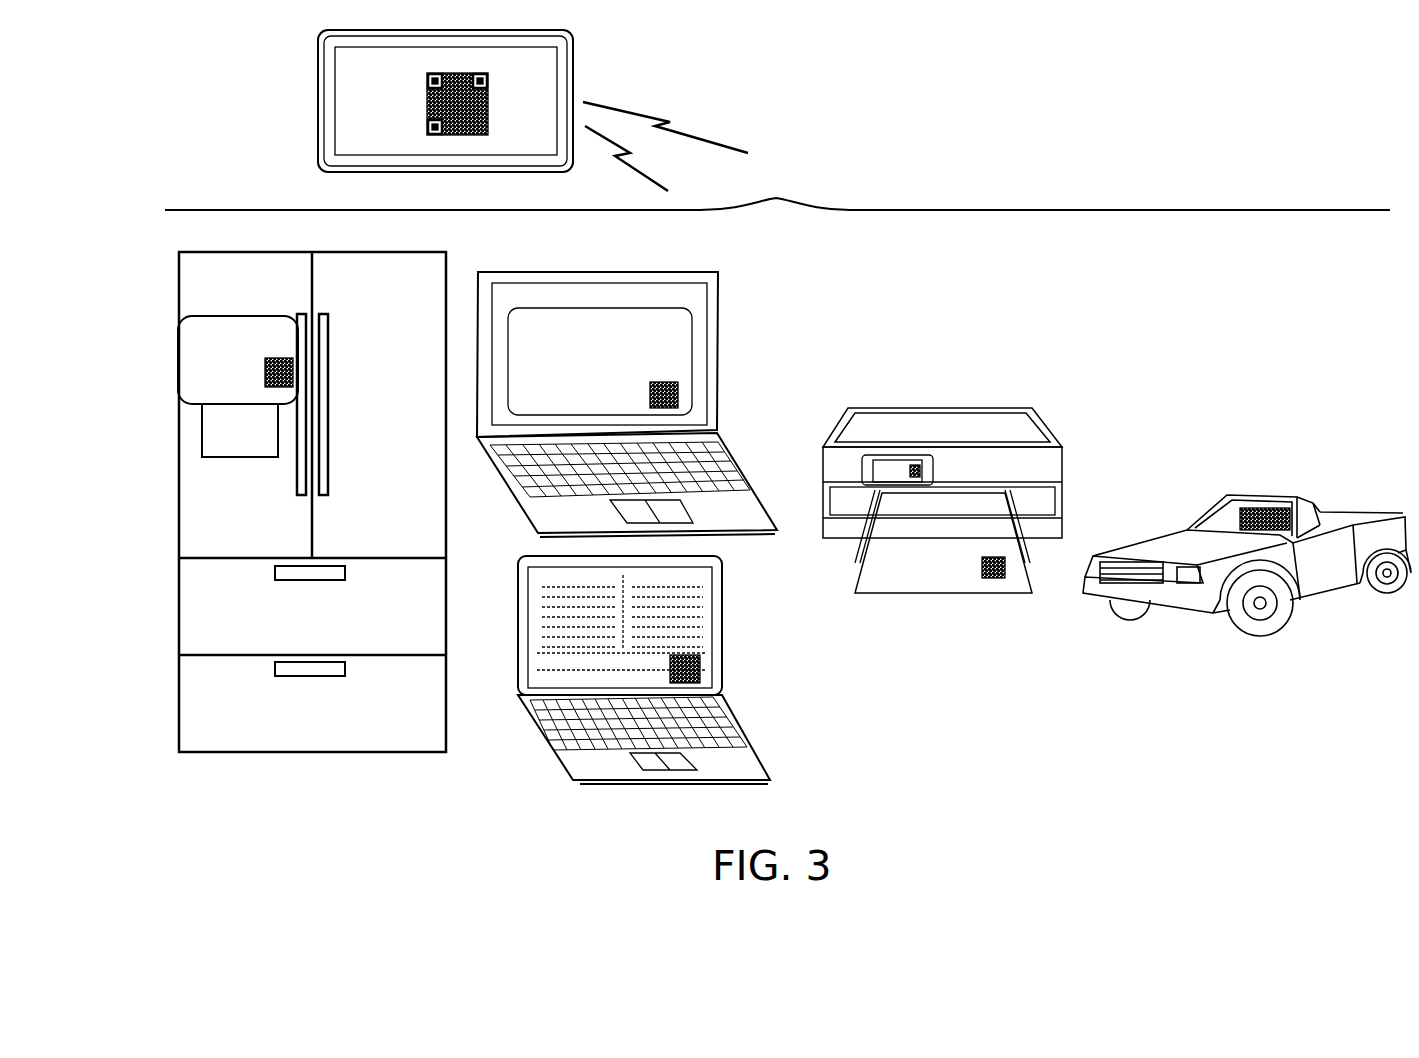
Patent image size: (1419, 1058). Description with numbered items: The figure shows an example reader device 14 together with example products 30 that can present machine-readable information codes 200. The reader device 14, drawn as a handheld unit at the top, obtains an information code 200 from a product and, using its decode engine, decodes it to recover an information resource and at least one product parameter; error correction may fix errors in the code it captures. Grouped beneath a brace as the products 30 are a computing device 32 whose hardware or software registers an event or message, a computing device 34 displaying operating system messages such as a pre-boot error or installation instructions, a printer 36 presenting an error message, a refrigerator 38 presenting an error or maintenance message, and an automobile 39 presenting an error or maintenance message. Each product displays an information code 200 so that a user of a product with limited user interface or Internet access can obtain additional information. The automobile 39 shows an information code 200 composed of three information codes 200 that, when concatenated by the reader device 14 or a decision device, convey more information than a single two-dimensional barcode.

The reader device 14 is at (573, 73).
The products 30 is at (777, 190).
The computing device 32 is at (660, 271).
The computing device 34 is at (520, 585).
The printer 36 is at (922, 408).
The refrigerator 38 is at (403, 251).
The automobile 39 is at (1184, 528).
The information code 200 is at (677, 395).